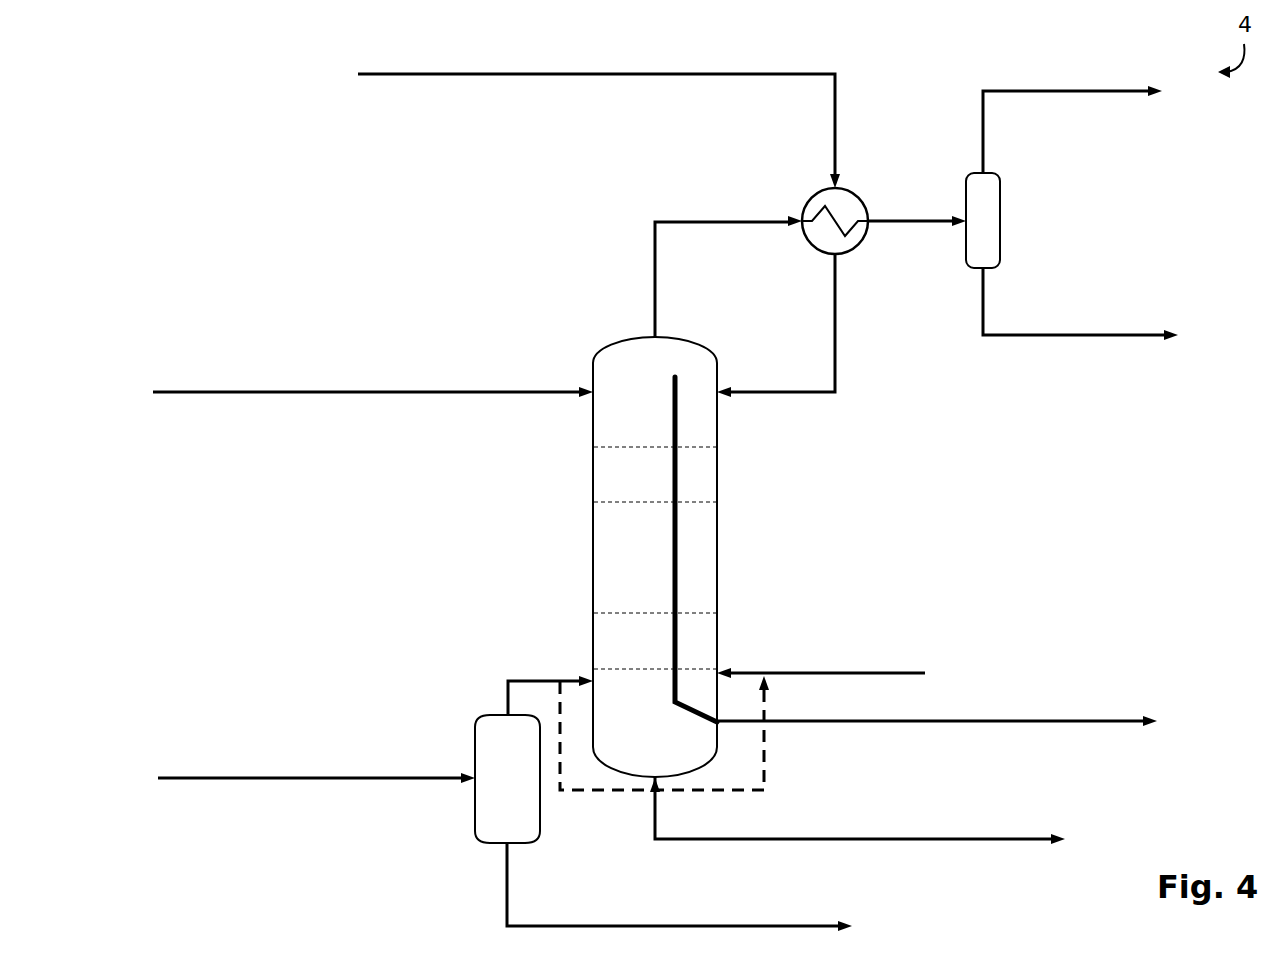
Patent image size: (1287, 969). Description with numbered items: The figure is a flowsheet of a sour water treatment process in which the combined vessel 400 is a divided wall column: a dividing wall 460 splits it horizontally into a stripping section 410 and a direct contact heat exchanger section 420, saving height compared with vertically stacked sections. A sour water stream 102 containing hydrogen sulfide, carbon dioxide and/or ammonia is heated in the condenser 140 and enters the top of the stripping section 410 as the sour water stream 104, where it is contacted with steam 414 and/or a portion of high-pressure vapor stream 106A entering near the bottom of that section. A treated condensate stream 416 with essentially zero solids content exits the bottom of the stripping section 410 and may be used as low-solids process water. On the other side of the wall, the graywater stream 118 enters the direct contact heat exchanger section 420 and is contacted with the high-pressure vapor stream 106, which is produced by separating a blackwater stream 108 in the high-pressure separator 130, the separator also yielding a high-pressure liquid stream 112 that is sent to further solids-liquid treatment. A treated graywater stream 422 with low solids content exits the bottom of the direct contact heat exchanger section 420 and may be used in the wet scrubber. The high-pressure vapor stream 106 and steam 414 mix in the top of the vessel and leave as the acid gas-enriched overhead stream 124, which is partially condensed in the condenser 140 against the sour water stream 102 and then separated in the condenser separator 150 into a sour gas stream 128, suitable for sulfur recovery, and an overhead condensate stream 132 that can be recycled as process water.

The combined vessel 400 is at (598, 357).
The stripping section 410 is at (657, 474).
The direct contact heat exchanger section 420 is at (655, 641).
The dividing wall 460 is at (677, 557).
The sour water stream 102 is at (493, 74).
The condenser 140 is at (810, 201).
The acid gas-enriched overhead stream 124 is at (702, 222).
The sour water stream 104 is at (805, 393).
The condenser separator 150 is at (1000, 221).
The sour gas stream 128 is at (1078, 92).
The overhead condensate stream 132 is at (1078, 336).
The graywater stream 118 is at (288, 392).
The steam 414 is at (808, 672).
The treated condensate stream 416 is at (1067, 720).
The portion of high-pressure vapor stream 106A is at (764, 742).
The high-pressure vapor stream 106 is at (548, 680).
The high-pressure separator 130 is at (507, 779).
The blackwater stream 108 is at (280, 778).
The high-pressure liquid stream 112 is at (716, 925).
The treated graywater stream 422 is at (870, 838).